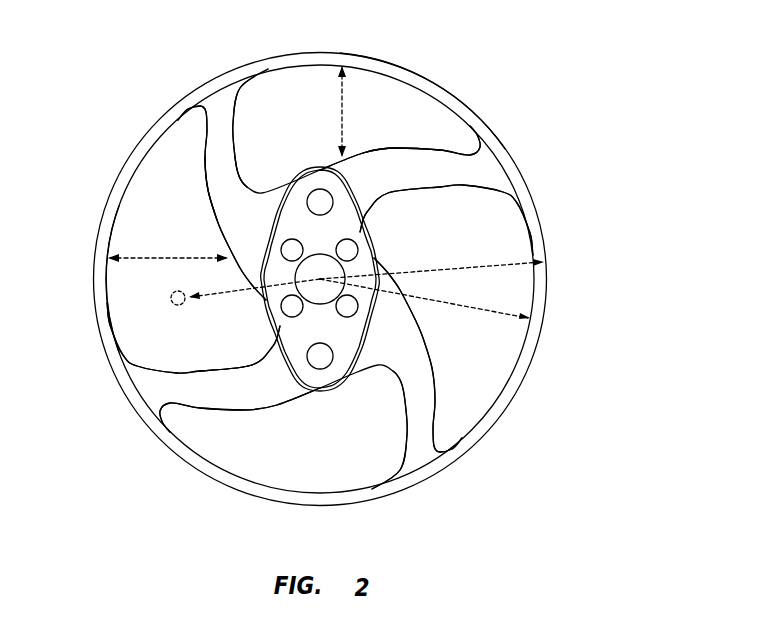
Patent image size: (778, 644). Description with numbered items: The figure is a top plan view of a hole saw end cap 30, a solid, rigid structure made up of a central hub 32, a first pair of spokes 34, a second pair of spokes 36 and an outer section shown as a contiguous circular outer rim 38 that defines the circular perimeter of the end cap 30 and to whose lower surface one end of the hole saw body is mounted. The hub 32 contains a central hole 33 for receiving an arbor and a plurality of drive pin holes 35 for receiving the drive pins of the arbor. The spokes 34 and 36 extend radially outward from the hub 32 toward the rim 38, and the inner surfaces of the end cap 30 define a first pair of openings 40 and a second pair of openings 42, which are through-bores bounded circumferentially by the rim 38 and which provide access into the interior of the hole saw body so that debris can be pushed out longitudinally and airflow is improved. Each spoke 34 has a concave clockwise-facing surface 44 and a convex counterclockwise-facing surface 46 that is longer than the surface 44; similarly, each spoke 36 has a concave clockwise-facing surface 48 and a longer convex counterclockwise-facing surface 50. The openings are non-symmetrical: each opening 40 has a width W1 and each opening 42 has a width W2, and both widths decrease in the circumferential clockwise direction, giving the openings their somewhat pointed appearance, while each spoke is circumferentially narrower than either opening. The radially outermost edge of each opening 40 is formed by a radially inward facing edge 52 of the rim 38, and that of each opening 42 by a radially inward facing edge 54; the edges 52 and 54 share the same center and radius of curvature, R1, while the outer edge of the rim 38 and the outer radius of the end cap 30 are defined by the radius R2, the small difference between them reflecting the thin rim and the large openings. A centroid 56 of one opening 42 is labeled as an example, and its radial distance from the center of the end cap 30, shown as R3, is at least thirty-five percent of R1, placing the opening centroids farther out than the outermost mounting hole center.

The hole saw end cap 30 is at (592, 103).
The central hub 32 is at (343, 323).
The central hole 33 is at (318, 278).
The first pair of spokes 34 is at (215, 102).
The drive pin holes 35 is at (345, 306).
The second pair of spokes 36 is at (431, 181).
The outer rim 38 is at (104, 340).
The first pair of openings 40 is at (295, 88).
The second pair of openings 42 is at (482, 326).
The clockwise-facing surface 44 is at (242, 174).
The counterclockwise-facing surface 46 is at (206, 193).
The clockwise-facing surface 48 is at (221, 368).
The counterclockwise-facing surface 50 is at (390, 149).
The radially inward facing edge 52 is at (447, 103).
The radially inward facing edge 54 is at (143, 152).
The centroid 56 is at (170, 298).
The width of opening 40 W1 is at (340, 60).
The width of opening 42 W2 is at (109, 256).
The radius of inner edges R1 is at (510, 317).
The outer radius of end cap R2 is at (517, 262).
The radial distance to opening centroid R3 is at (230, 292).